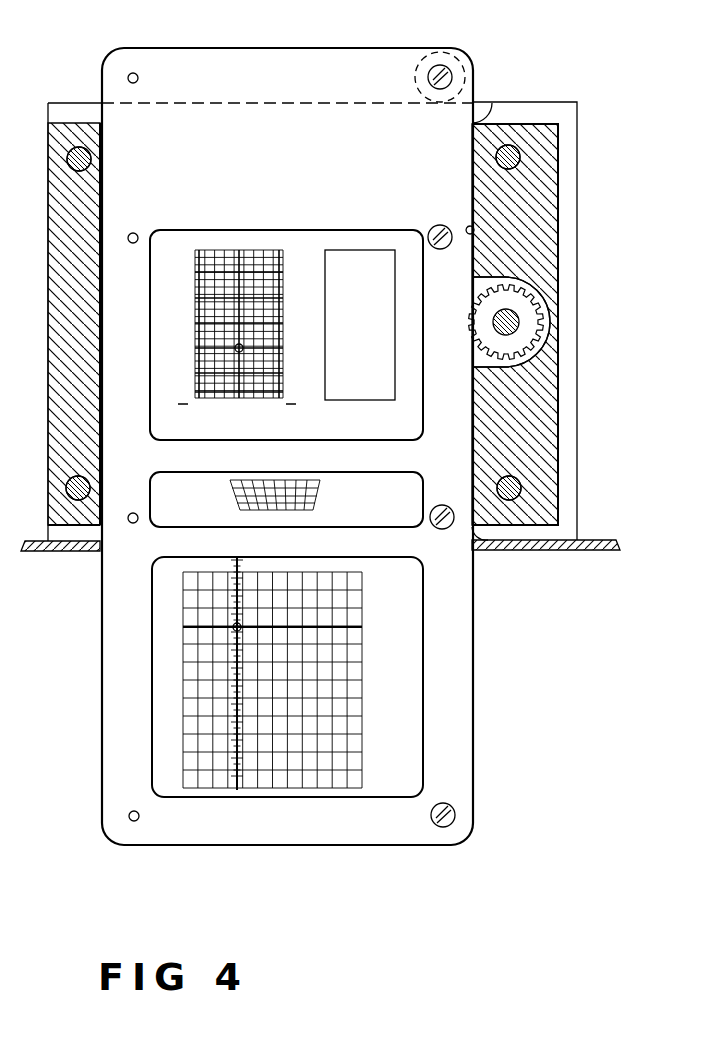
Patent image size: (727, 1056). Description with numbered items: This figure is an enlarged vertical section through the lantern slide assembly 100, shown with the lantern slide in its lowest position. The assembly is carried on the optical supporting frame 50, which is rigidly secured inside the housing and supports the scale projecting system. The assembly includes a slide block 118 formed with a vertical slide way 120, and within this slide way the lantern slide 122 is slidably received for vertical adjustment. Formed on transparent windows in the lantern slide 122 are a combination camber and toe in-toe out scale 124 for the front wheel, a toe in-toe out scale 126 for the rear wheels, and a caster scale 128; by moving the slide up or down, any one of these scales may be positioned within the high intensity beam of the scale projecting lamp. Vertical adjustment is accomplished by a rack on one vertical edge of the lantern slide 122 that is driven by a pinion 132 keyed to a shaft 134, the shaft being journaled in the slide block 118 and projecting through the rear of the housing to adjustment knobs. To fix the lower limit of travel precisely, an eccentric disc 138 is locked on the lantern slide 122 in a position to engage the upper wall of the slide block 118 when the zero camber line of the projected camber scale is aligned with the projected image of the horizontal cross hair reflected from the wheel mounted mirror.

The optical supporting frame 50 is at (562, 553).
The lantern slide assembly 100 is at (492, 79).
The slide block 118 is at (554, 156).
The vertical slide way 120 is at (470, 226).
The lantern slide 122 is at (388, 166).
The camber-toe in-toe out scale 124 is at (213, 257).
The toe in-toe out scale 126 is at (265, 481).
The caster scale 128 is at (183, 632).
The pinion 132 is at (537, 328).
The shaft 134 is at (513, 317).
The eccentric disc 138 is at (456, 53).